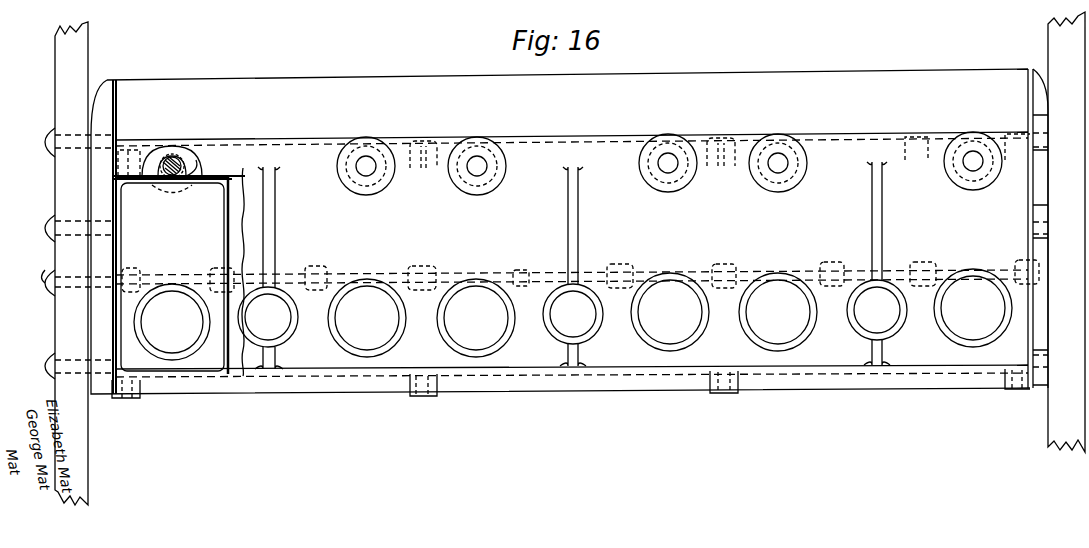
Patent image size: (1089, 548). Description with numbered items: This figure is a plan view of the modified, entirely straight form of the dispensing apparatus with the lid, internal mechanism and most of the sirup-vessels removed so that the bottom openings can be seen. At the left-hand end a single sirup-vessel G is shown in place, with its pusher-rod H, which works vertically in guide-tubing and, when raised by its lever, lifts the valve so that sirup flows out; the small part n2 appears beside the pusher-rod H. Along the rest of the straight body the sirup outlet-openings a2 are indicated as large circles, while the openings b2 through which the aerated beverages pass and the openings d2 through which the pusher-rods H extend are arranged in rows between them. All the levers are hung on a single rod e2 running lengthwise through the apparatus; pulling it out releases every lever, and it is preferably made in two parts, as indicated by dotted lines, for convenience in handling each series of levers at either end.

The sirup-vessel G is at (172, 276).
The pusher-rod H is at (179, 162).
The pin arm n2 is at (194, 164).
The outlet-openings a2 is at (670, 313).
The openings for aerated beverages b2 is at (572, 265).
The openings for pusher-rods d2 is at (669, 163).
The rod e2 is at (364, 271).